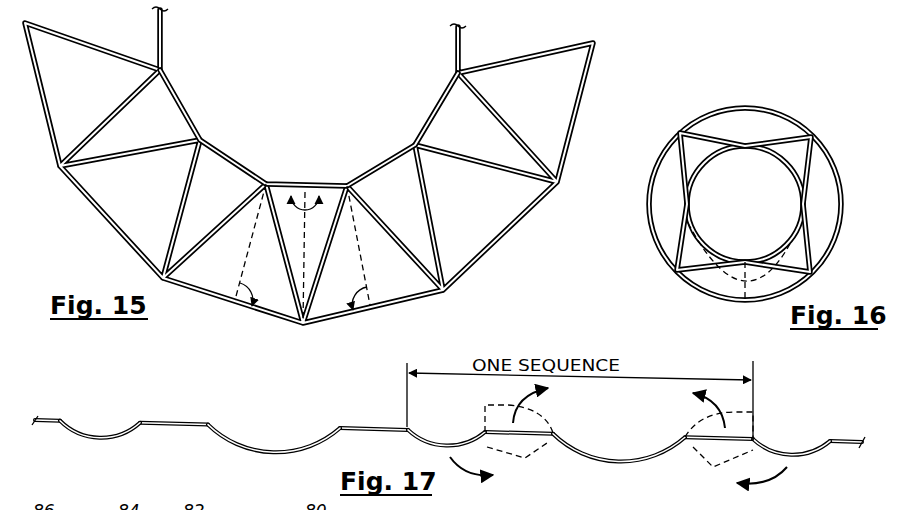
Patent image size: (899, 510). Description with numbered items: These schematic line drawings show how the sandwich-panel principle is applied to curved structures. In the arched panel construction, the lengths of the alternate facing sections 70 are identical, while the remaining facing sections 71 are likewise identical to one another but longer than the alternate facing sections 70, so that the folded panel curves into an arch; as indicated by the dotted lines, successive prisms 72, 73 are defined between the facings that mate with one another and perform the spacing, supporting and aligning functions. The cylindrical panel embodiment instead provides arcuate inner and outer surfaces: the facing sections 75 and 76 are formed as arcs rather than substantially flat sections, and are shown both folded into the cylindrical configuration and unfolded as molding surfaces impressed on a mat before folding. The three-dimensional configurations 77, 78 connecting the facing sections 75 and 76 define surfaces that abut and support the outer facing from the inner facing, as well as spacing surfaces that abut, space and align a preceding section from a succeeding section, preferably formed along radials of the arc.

In FIG. 15, the alternate facing sections 70 is at (176, 93).
In FIG. 15, the remaining facing sections 71 is at (56, 150).
In FIG. 15, the prism 72 is at (245, 258).
In FIG. 15, the prism 73 is at (361, 252).
In FIG. 16, the facing section 75 is at (707, 163).
In FIG. 17, the facing section 75 is at (86, 433).
In FIG. 16, the facing section 76 is at (785, 117).
In FIG. 17, the facing section 76 is at (245, 447).
In FIG. 16, the three-dimensional configuration 77 is at (703, 228).
In FIG. 16, the three-dimensional configuration 78 is at (782, 242).